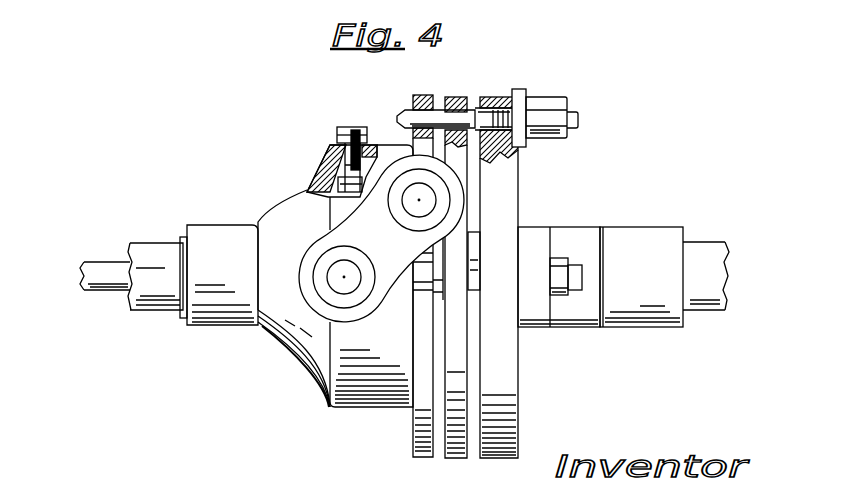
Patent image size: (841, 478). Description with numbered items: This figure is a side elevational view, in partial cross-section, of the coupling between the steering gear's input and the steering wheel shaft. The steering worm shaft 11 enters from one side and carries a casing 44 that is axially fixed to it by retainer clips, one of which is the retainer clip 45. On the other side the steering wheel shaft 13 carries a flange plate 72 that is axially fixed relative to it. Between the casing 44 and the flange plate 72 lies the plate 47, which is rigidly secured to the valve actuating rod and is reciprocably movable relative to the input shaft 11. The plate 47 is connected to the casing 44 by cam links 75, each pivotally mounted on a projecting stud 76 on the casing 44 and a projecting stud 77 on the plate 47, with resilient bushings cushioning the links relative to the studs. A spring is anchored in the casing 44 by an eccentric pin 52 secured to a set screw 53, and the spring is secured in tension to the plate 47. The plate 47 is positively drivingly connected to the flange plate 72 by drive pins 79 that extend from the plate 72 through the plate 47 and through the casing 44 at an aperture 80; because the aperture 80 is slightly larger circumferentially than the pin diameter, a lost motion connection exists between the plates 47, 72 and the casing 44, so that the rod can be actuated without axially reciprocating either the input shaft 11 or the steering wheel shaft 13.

The steering worm shaft 11 is at (128, 248).
The steering wheel shaft 13 is at (663, 322).
The casing 44 is at (307, 367).
The retainer clip 45 is at (176, 318).
The plate 47 is at (450, 380).
The eccentric pin 52 is at (322, 163).
The set screw 53 is at (343, 127).
The flange plate 72 is at (512, 342).
The cam link 75 is at (393, 264).
The projecting stud 76 is at (340, 272).
The projecting stud 77 is at (432, 200).
The drive pin 79 is at (462, 115).
The aperture 80 is at (412, 101).